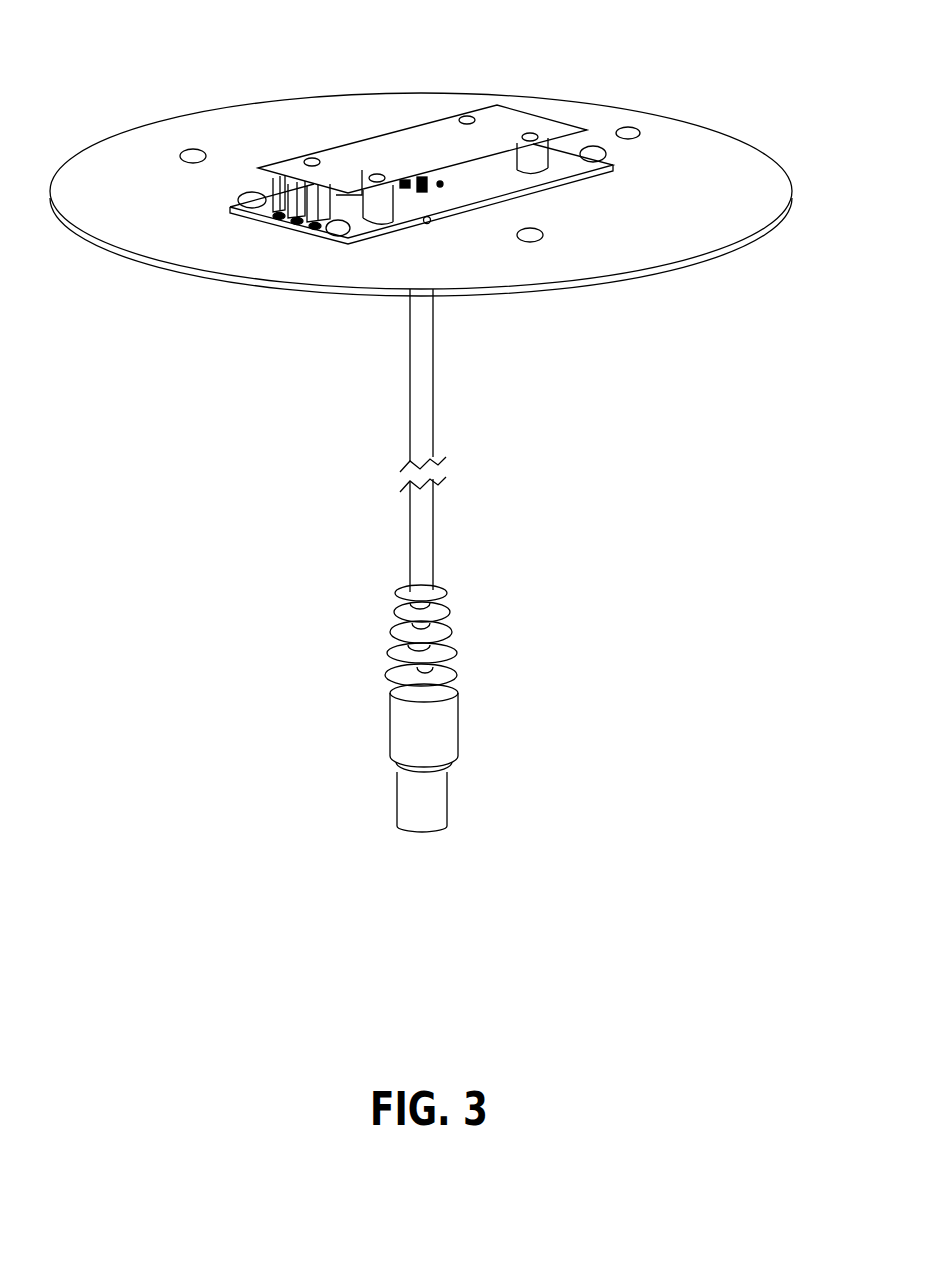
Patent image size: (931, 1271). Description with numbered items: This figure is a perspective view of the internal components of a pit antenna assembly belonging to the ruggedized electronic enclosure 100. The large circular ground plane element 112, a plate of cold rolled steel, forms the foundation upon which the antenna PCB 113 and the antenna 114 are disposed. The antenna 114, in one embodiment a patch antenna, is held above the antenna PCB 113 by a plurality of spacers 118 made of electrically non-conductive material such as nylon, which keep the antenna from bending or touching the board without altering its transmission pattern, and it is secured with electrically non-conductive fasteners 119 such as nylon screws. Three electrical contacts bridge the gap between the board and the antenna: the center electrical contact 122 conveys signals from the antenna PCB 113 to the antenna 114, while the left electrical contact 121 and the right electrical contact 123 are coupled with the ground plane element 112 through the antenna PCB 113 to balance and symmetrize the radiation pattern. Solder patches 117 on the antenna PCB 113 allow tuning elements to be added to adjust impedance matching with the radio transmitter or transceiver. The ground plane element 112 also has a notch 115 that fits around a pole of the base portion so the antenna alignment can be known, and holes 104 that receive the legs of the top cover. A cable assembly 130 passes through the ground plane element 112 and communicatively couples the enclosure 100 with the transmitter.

The ruggedized electronic enclosure 100 is at (229, 403).
The holes 104 is at (198, 162).
The ground plane element 112 is at (462, 284).
The antenna printed circuit board 113 is at (483, 177).
The antenna 114 is at (389, 121).
The notch 115 is at (678, 116).
The solder patches 117 is at (312, 232).
The spacers 118 is at (383, 215).
The fasteners 119 is at (467, 116).
The left electrical contact 121 is at (278, 180).
The center electrical contact 122 is at (302, 185).
The right electrical contact 123 is at (333, 193).
The cable assembly 130 is at (425, 567).